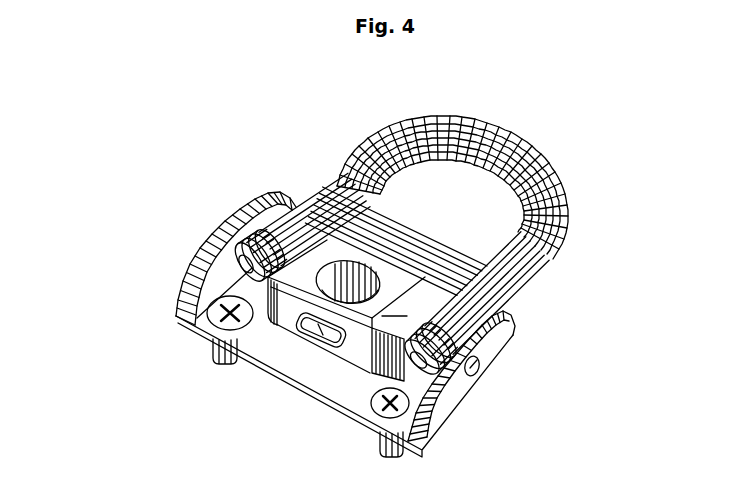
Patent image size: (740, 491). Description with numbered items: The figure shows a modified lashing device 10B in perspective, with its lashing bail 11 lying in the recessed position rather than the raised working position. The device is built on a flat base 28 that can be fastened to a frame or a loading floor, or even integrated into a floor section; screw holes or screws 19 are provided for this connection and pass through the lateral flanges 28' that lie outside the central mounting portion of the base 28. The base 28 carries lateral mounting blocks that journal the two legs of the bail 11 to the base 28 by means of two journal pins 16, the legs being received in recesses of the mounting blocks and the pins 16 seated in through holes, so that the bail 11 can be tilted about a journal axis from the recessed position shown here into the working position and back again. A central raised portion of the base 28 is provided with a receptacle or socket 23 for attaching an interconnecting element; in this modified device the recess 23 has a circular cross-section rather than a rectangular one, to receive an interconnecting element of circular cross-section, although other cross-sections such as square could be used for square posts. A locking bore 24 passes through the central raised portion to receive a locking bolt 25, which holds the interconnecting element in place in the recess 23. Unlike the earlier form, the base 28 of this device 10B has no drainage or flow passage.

The modified lashing device 10B is at (541, 99).
The lashing bail 11 is at (553, 180).
The journal pins 16 is at (478, 376).
The screw holes or screws 19 is at (210, 330).
The receptacle or socket 23 is at (248, 213).
The locking bore 24 is at (330, 263).
The locking bolt 25 is at (300, 350).
The flat base 28 is at (344, 362).
The lateral flanges 28' is at (303, 316).